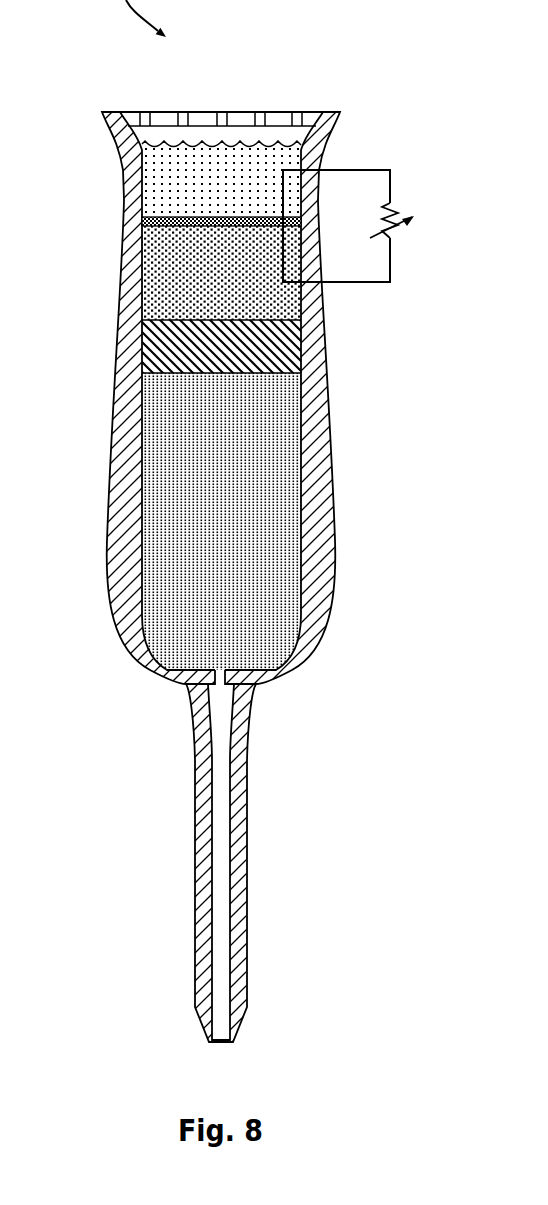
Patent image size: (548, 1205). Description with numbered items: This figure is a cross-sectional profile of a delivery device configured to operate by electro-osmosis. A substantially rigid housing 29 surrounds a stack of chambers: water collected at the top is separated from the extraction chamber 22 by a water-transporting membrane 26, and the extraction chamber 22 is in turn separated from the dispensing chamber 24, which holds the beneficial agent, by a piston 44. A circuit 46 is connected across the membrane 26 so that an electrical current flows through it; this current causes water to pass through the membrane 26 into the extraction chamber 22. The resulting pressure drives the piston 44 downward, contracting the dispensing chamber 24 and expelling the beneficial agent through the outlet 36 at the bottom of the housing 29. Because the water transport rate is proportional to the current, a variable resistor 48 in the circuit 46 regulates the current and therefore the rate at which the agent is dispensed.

The extraction chamber 22 is at (160, 299).
The dispensing chamber 24 is at (158, 522).
The water-transporting membrane 26 is at (162, 227).
The housing 29 is at (128, 470).
The outlet 36 is at (223, 679).
The piston 44 is at (156, 354).
The circuit 46 is at (372, 283).
The variable resistor 48 is at (395, 200).